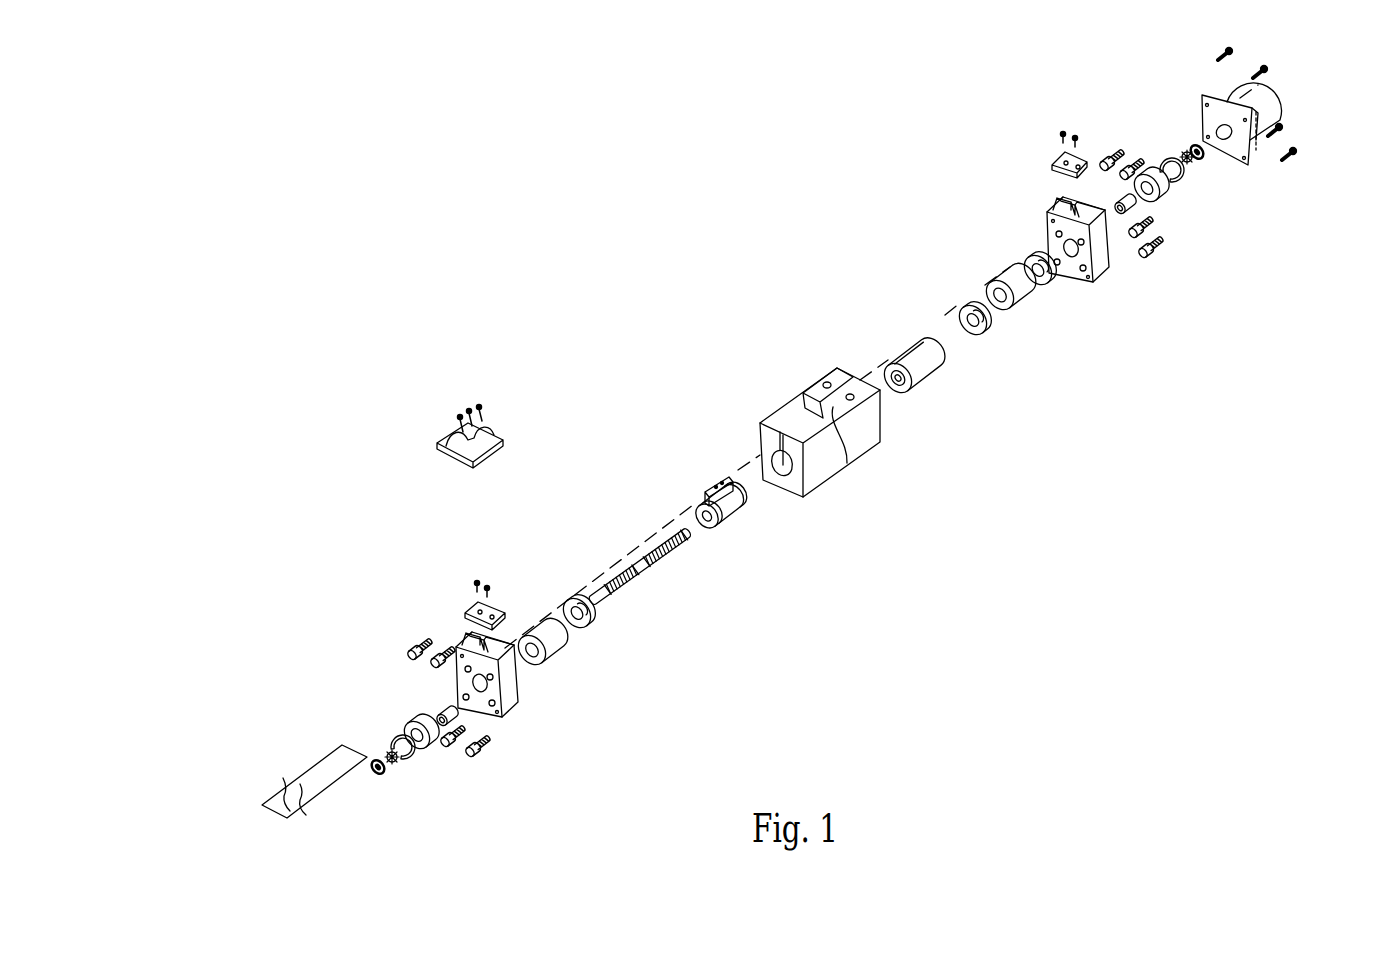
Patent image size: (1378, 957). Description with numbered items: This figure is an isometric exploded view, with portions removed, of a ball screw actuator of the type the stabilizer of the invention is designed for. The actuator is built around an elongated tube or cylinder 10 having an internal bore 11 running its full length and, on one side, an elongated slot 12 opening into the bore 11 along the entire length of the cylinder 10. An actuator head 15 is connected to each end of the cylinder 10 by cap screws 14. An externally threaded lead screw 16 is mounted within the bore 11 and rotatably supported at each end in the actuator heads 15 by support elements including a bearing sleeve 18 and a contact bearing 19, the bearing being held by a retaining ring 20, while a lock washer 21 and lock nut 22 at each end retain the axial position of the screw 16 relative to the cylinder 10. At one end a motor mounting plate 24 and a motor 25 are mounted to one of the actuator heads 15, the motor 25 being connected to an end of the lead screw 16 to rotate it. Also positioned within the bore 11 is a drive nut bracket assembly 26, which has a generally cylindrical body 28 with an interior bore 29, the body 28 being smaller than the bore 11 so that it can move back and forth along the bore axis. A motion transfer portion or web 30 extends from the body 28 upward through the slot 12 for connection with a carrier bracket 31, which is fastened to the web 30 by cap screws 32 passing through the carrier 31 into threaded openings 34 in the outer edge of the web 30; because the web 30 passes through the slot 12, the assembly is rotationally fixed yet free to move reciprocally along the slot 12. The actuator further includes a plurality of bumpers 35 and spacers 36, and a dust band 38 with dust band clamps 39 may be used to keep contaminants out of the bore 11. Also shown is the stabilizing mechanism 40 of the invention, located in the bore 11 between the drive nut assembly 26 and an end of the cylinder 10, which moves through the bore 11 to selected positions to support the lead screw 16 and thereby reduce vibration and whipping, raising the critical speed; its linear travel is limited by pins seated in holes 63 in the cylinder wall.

The cylinder 10 is at (838, 467).
The internal bore 11 is at (795, 488).
The elongated slot 12 is at (803, 410).
The cap screws 14 is at (410, 650).
The actuator head 15 is at (515, 708).
The lead screw 16 is at (640, 578).
The bearing sleeve 18 is at (438, 718).
The contact bearing 19 is at (408, 732).
The retaining ring 20 is at (420, 750).
The lock washer 21 is at (398, 762).
The lock nut 22 is at (382, 775).
The motor mounting plate 24 is at (1200, 113).
The motor 25 is at (1282, 108).
The drive nut bracket assembly 26 is at (700, 490).
The cylindrical body 28 is at (735, 518).
The interior bore 29 is at (712, 530).
The motion transfer portion 30 is at (730, 505).
The carrier bracket 31 is at (495, 438).
The cap screws 32 is at (485, 402).
The threaded openings 34 is at (720, 480).
The bumpers 35 is at (595, 620).
The spacers 36 is at (558, 652).
The dust band 38 is at (320, 760).
The dust band clamps 39 is at (472, 605).
The stabilizing mechanism 40 is at (898, 356).
The holes 63 is at (826, 380).